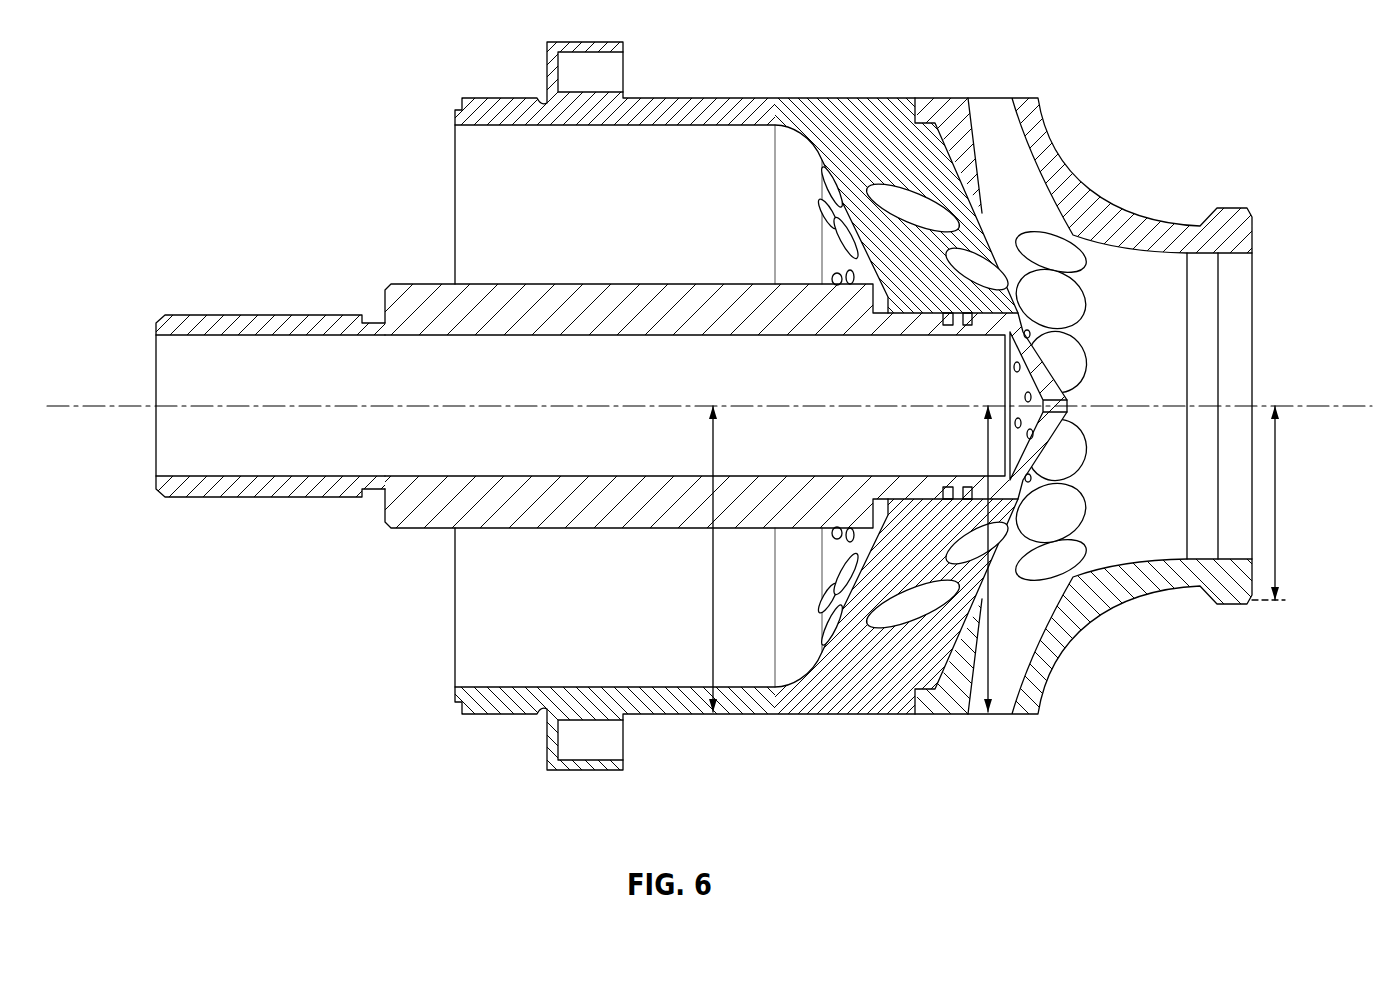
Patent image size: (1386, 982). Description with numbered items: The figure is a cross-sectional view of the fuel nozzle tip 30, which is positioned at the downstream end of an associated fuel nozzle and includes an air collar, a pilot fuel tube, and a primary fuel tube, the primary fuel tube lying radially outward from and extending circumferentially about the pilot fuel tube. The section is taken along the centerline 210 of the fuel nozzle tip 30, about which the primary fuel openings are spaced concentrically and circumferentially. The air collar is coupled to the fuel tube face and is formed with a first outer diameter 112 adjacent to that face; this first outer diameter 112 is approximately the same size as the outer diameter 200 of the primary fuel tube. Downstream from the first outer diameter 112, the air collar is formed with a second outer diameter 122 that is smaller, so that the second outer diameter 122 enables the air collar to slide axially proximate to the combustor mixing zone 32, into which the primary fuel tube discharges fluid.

The fuel nozzle tip 30 is at (255, 118).
The centerline 210 is at (87, 448).
The combustor mixing zone 32 is at (1342, 378).
The first outer diameter 112 is at (988, 456).
The outer diameter 200 is at (713, 558).
The second outer diameter 122 is at (1277, 503).